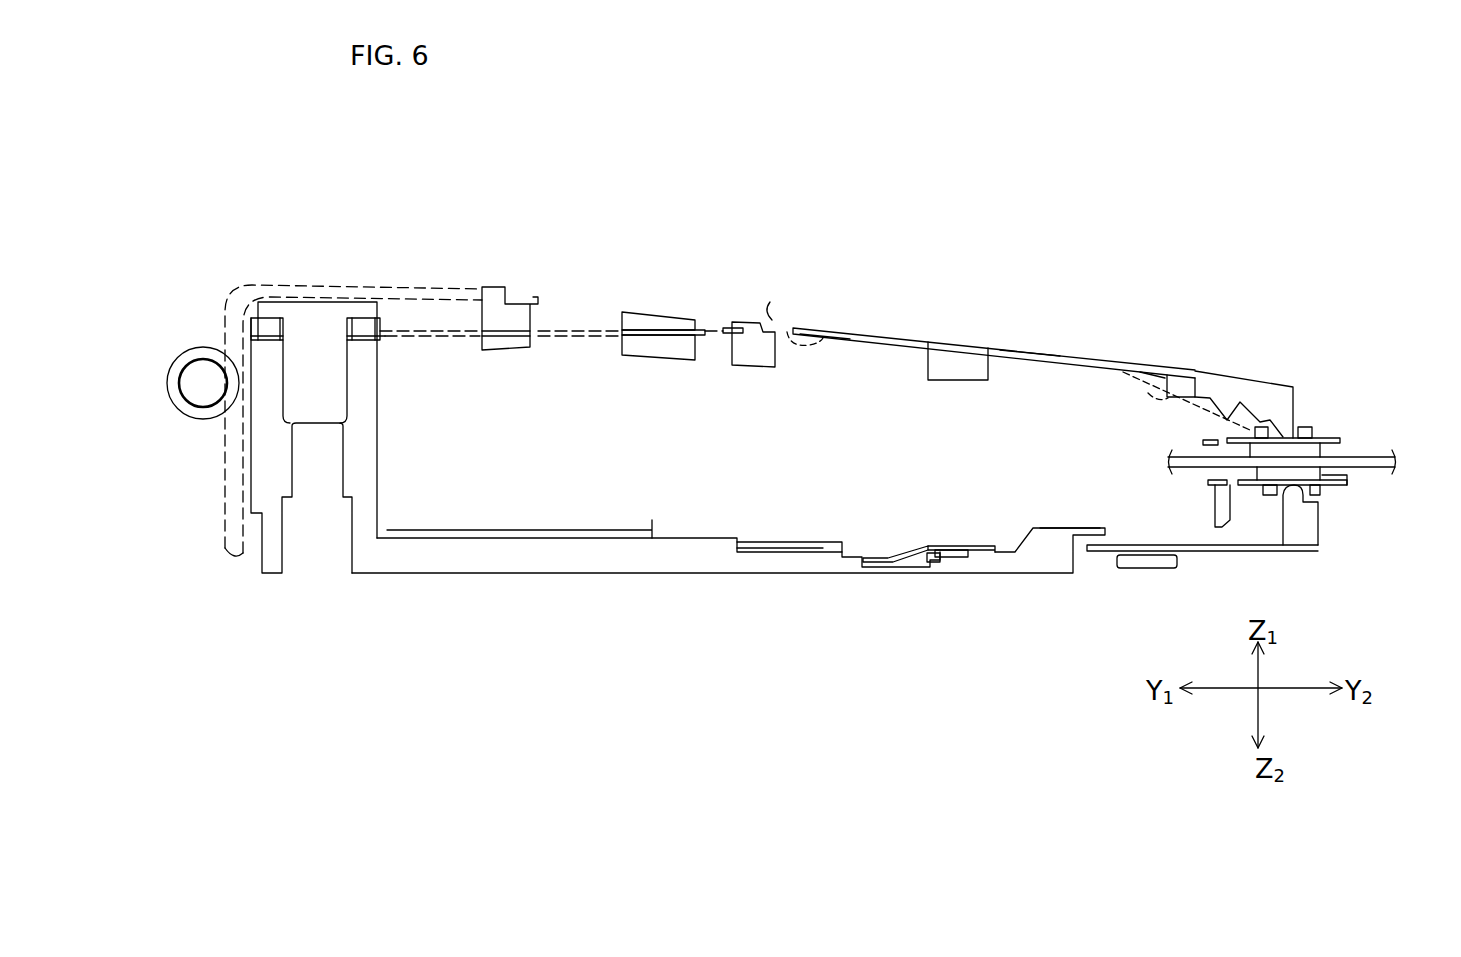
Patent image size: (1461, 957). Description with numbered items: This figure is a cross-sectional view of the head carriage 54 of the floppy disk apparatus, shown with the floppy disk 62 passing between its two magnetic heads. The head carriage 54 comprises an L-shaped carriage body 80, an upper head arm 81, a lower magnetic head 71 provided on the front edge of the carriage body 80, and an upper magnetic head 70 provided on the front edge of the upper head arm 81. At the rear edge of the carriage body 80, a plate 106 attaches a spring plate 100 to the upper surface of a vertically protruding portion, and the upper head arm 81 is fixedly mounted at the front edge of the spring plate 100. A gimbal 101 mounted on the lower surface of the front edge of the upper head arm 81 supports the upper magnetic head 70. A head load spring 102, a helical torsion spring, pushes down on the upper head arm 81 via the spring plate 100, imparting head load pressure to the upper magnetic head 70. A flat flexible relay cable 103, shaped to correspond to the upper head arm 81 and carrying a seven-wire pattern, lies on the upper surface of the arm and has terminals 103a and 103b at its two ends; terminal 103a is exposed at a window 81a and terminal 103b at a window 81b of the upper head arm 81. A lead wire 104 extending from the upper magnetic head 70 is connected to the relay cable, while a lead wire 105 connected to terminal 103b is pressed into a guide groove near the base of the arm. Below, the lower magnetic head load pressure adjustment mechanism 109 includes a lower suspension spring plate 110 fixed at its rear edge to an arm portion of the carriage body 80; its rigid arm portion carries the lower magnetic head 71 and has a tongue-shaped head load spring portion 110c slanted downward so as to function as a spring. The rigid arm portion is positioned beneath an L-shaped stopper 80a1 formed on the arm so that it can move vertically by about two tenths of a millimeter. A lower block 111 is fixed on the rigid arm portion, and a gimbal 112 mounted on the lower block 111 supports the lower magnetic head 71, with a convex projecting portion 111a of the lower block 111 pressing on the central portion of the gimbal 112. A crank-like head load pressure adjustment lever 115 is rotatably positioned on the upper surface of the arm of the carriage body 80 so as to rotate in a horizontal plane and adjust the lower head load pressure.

The head carriage 54 is at (950, 228).
The floppy disk 62 is at (1377, 457).
The upper magnetic head 70 is at (1310, 450).
The lower magnetic head 71 is at (1347, 485).
The carriage body 80 is at (605, 575).
The L-shaped stopper 80a1 is at (1087, 528).
The upper head arm 81 is at (1208, 372).
The window 81a is at (1028, 365).
The window 81b is at (890, 360).
The spring plate 100 is at (421, 338).
The gimbal 101 is at (1342, 437).
The head load spring 102 is at (200, 336).
The flat flexible relay cable 103 is at (1053, 352).
The terminal 103a is at (1122, 368).
The terminal 103b is at (822, 345).
The lead wire 104 is at (1165, 395).
The lead wire 105 is at (778, 328).
The plate 106 is at (372, 325).
The lower magnetic head load pressure adjustment mechanism 109 is at (958, 533).
The lower suspension spring plate 110 is at (1198, 550).
The tongue-shaped head load spring portion 110c is at (900, 552).
The lower block 111 is at (1225, 512).
The convex projecting portion 111a is at (1293, 497).
The gimbal 112 is at (1345, 475).
The head load pressure adjustment lever 115 is at (925, 562).